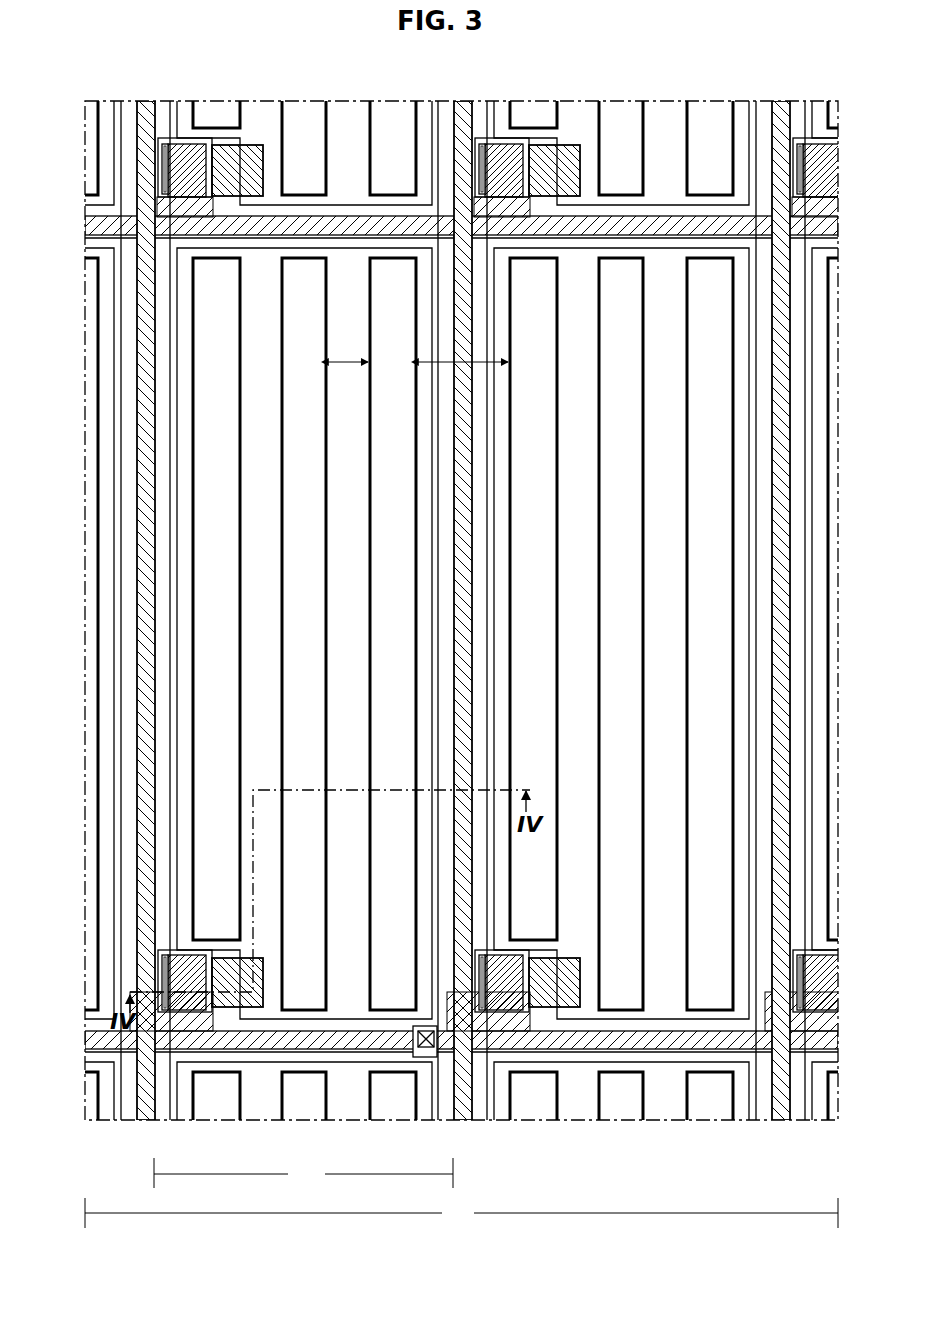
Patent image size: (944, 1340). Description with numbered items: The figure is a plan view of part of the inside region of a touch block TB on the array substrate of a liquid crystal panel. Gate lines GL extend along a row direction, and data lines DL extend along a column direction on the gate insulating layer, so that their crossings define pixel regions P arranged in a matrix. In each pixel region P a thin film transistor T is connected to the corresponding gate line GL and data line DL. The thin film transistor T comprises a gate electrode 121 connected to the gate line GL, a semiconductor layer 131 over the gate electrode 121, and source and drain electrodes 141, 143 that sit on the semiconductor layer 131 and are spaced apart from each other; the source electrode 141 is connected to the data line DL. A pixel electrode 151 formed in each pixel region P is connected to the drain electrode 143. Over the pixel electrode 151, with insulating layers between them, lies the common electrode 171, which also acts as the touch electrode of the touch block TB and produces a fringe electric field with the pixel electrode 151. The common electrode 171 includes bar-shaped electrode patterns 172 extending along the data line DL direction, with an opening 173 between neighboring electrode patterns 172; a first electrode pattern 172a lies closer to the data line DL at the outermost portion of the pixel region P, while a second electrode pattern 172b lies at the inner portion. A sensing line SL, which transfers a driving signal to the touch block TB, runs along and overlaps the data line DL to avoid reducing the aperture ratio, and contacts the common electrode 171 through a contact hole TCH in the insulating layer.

The gate electrode 121 is at (153, 935).
The semiconductor layer 131 is at (182, 1050).
The source electrode 141 is at (153, 982).
The drain electrode 143 is at (228, 1050).
The pixel electrode 151 is at (177, 390).
The common electrode 171 is at (222, 634).
The electrode patterns 172 is at (418, 334).
The first electrode pattern 172a is at (463, 352).
The second electrode pattern 172b is at (348, 352).
The opening 173 is at (388, 456).
The gate line GL is at (108, 1043).
The data line DL is at (152, 474).
The sensing line SL is at (118, 439).
The thin film transistor T is at (498, 1022).
The contact hole TCH is at (412, 1039).
The pixel region P is at (303, 1173).
The touch block TB is at (461, 1213).